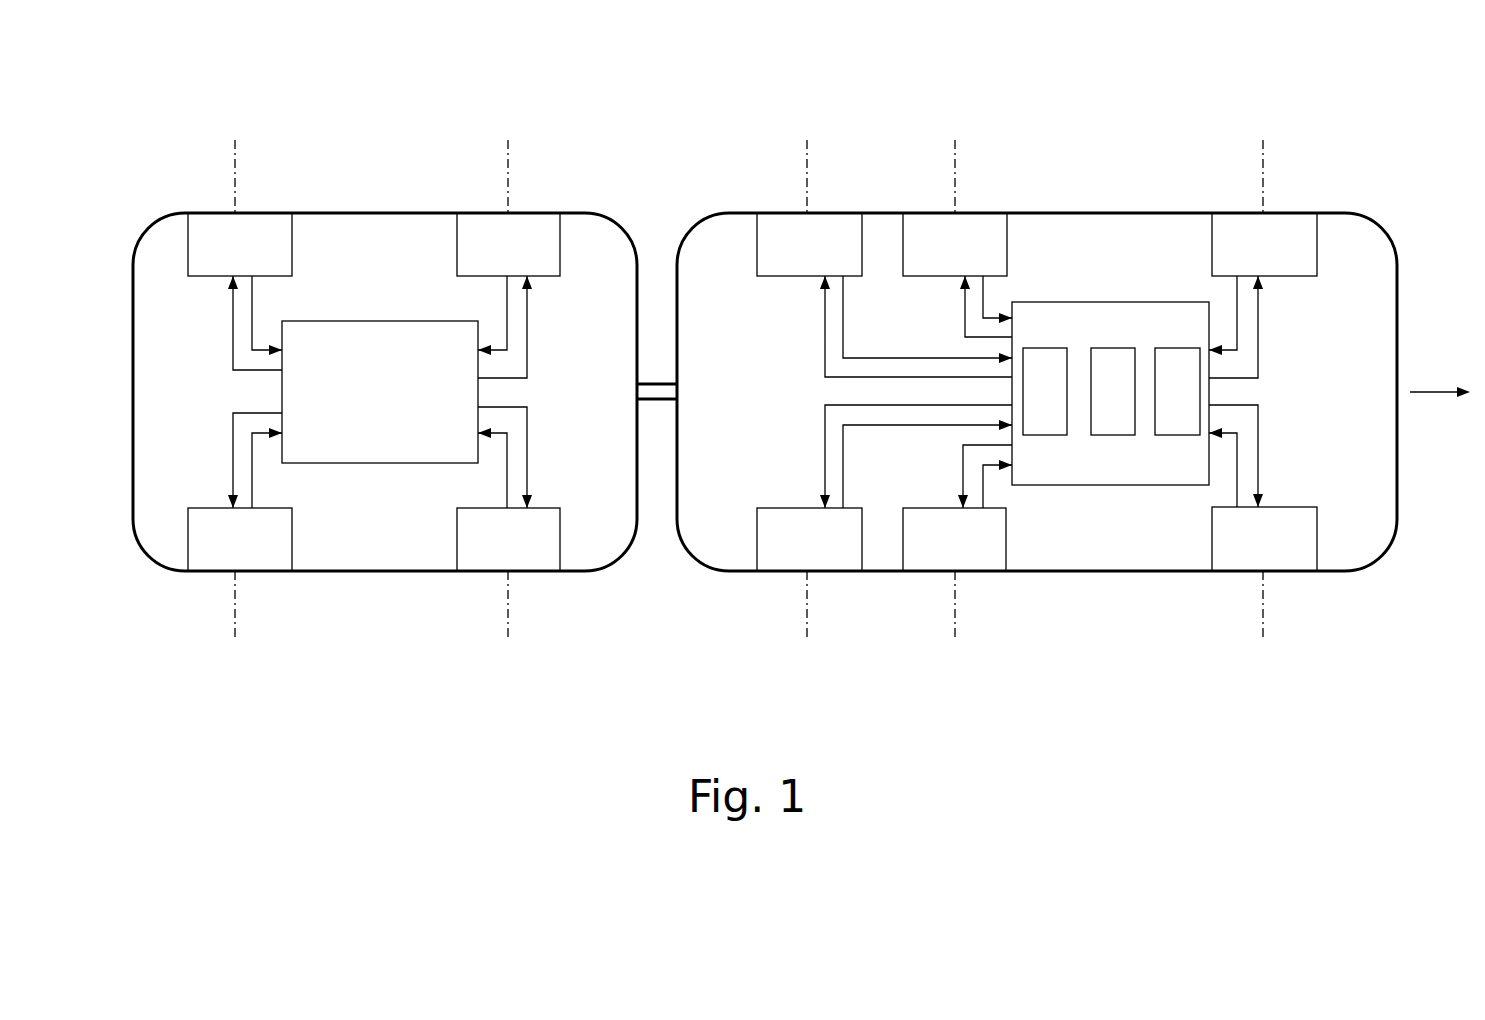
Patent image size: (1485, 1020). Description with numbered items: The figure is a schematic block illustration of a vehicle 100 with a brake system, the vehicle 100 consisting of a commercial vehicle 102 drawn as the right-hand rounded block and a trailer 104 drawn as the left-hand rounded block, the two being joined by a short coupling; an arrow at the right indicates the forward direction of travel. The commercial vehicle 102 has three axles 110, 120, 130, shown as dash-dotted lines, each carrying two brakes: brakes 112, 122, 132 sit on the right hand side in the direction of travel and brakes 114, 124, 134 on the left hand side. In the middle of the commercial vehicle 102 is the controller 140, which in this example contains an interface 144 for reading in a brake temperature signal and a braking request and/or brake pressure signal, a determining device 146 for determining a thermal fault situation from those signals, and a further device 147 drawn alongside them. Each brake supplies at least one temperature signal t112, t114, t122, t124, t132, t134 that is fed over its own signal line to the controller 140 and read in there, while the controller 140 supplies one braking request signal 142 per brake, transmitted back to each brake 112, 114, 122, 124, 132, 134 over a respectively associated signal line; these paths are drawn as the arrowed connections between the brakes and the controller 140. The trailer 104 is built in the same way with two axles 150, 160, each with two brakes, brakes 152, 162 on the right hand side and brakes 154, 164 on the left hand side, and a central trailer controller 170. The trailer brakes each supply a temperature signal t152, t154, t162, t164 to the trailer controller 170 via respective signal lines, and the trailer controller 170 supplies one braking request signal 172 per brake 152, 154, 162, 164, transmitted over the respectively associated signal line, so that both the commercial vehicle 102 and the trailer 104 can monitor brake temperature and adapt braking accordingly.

The vehicle 100 is at (1320, 104).
The commercial vehicle 102 is at (1382, 230).
The trailer 104 is at (162, 567).
The axle 110 is at (1265, 622).
The brake 112 is at (1292, 223).
The brake 114 is at (1287, 538).
The axle 120 is at (958, 625).
The brake 122 is at (965, 230).
The brake 124 is at (977, 555).
The axle 130 is at (810, 630).
The brake 132 is at (832, 235).
The brake 134 is at (775, 558).
The controller 140 is at (1165, 312).
The braking request signal 142 is at (1045, 399).
The interface 144 is at (1175, 415).
The determining device 146 is at (1103, 363).
The interface unit 147 is at (1043, 373).
The axle 150 is at (513, 625).
The brake 152 is at (527, 230).
The brake 154 is at (533, 550).
The axle 160 is at (237, 628).
The brake 162 is at (256, 228).
The brake 164 is at (268, 545).
The trailer controller 170 is at (345, 330).
The braking request signal 172 is at (374, 408).
The temperature signal t112 is at (1237, 302).
The temperature signal t114 is at (1237, 487).
The temperature signal t122 is at (983, 300).
The temperature signal t124 is at (985, 487).
The temperature signal t132 is at (845, 303).
The temperature signal t134 is at (845, 487).
The temperature signal t152 is at (507, 305).
The temperature signal t154 is at (507, 484).
The temperature signal t162 is at (253, 314).
The temperature signal t164 is at (253, 470).